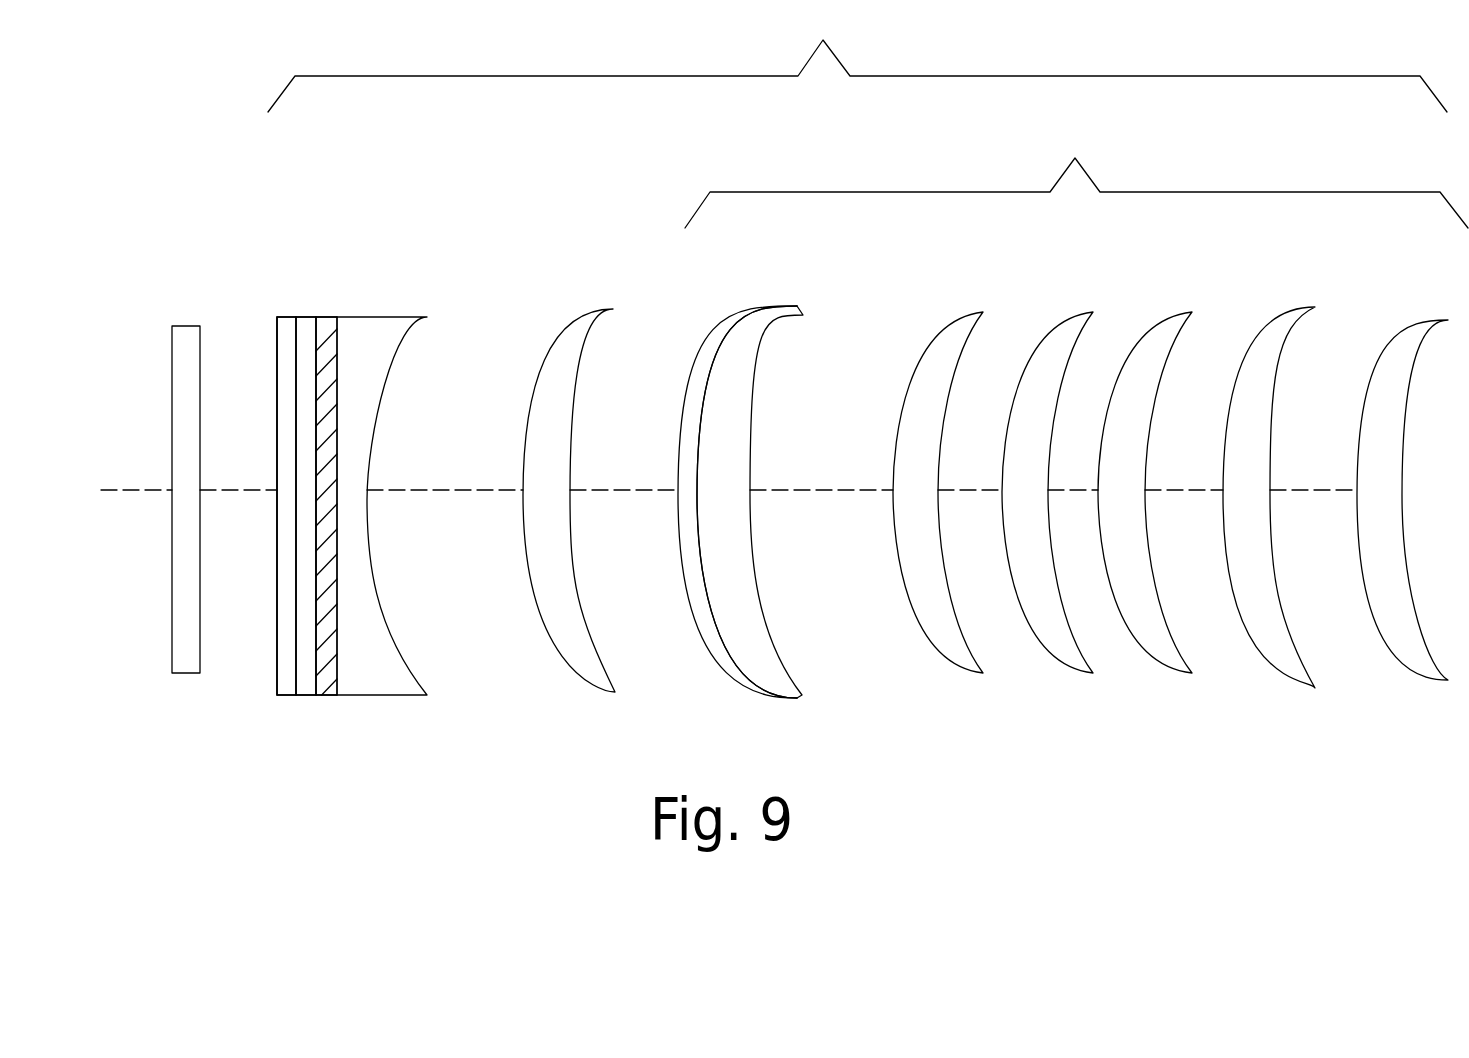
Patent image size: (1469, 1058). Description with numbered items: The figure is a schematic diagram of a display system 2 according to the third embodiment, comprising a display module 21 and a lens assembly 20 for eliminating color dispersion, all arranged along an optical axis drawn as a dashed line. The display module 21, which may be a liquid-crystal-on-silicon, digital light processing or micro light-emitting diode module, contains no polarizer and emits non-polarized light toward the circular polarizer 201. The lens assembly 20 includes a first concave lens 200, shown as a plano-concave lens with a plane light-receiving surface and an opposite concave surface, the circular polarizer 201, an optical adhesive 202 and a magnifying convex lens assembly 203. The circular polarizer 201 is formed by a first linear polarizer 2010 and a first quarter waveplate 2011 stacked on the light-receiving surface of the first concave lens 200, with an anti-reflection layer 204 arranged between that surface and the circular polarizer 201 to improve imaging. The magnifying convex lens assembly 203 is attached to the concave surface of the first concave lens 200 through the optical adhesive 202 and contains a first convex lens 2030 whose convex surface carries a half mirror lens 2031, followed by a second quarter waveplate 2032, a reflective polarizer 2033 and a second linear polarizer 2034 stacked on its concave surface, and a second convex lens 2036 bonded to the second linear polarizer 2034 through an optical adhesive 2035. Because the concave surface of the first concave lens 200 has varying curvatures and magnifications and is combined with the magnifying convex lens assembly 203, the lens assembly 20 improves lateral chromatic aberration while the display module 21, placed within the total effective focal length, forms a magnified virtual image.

The display system 2 is at (1243, 822).
The lens assembly 20 is at (857, 58).
The display module 21 is at (183, 347).
The first concave lens 200 is at (392, 327).
The circular polarizer 201 is at (353, 811).
The first linear polarizer 2010 is at (278, 683).
The first quarter waveplate 2011 is at (308, 683).
The anti-reflection layer 204 is at (328, 327).
The optical adhesive 202 is at (580, 335).
The magnifying convex lens assembly 203 is at (1076, 173).
The first convex lens 2030 is at (787, 327).
The half mirror lens 2031 is at (738, 338).
The second quarter waveplate 2032 is at (948, 337).
The reflective polarizer 2033 is at (1072, 333).
The second linear polarizer 2034 is at (1158, 333).
The optical adhesive 2035 is at (1283, 333).
The second convex lens 2036 is at (1422, 338).